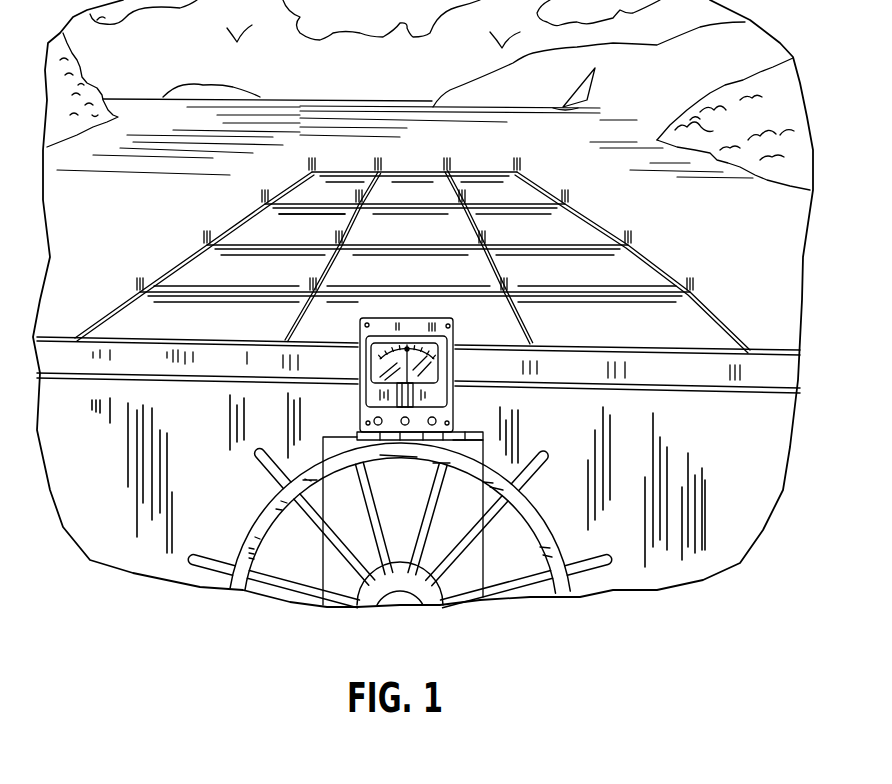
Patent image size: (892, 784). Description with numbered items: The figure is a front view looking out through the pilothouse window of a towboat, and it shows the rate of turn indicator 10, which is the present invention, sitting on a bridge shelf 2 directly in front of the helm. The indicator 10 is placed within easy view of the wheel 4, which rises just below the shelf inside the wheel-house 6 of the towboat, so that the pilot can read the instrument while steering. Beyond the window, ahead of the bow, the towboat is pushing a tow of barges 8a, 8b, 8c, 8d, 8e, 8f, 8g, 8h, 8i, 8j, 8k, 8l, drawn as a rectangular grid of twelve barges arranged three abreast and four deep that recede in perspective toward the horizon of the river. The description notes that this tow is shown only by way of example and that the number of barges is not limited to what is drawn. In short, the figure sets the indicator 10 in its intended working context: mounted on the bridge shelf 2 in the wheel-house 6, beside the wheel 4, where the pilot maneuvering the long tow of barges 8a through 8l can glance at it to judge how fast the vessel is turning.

The bridge shelf 2 is at (487, 447).
The wheel 4 is at (563, 462).
The wheel-house 6 is at (749, 446).
The barge 8a is at (226, 315).
The barge 8b is at (338, 317).
The barge 8c is at (597, 318).
The barge 8d is at (239, 270).
The barge 8e is at (408, 270).
The barge 8f is at (586, 270).
The barge 8g is at (321, 210).
The barge 8h is at (410, 227).
The barge 8i is at (513, 227).
The barge 8j is at (312, 196).
The barge 8k is at (412, 190).
The barge 8l is at (482, 190).
The rate of turn indicator 10 is at (338, 395).